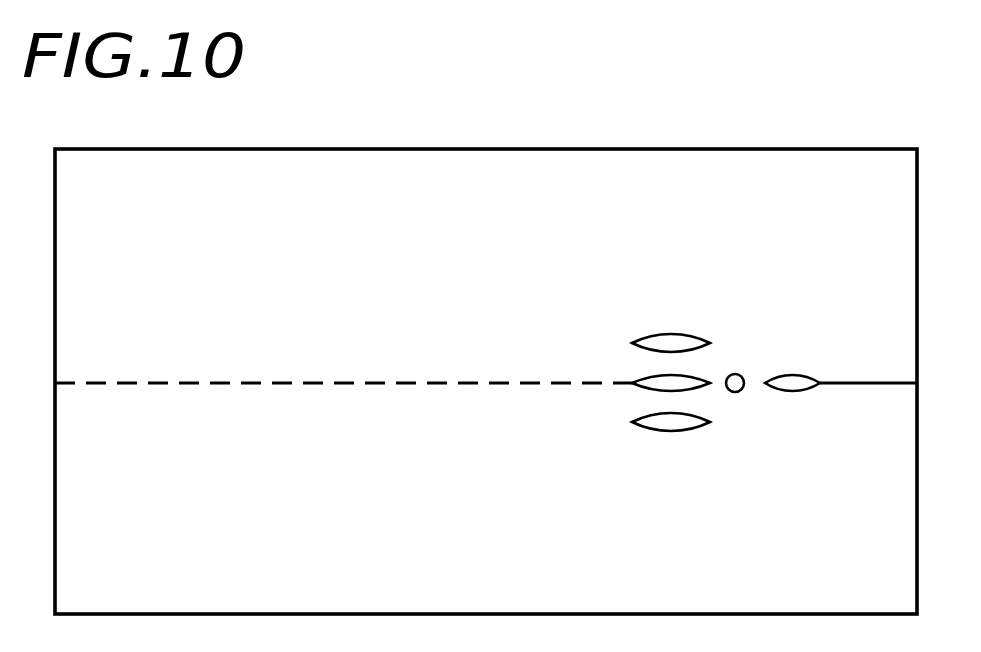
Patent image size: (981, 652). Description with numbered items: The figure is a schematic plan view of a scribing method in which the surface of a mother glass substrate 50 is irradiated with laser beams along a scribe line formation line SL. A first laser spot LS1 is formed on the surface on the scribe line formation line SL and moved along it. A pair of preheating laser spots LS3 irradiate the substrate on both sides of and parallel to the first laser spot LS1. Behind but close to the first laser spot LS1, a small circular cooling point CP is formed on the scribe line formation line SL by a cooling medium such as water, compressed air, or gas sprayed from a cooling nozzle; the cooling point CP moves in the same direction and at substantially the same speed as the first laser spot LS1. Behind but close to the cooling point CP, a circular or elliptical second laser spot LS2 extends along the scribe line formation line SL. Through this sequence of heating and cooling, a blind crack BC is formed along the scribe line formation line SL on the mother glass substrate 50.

The mother glass substrate 50 is at (640, 149).
The scribe line formation line SL is at (198, 380).
The first laser spot LS1 is at (633, 380).
The second laser spot LS2 is at (790, 377).
The preheating laser spots LS3 is at (663, 335).
The cooling point CP is at (733, 392).
The blind crack BC is at (850, 383).